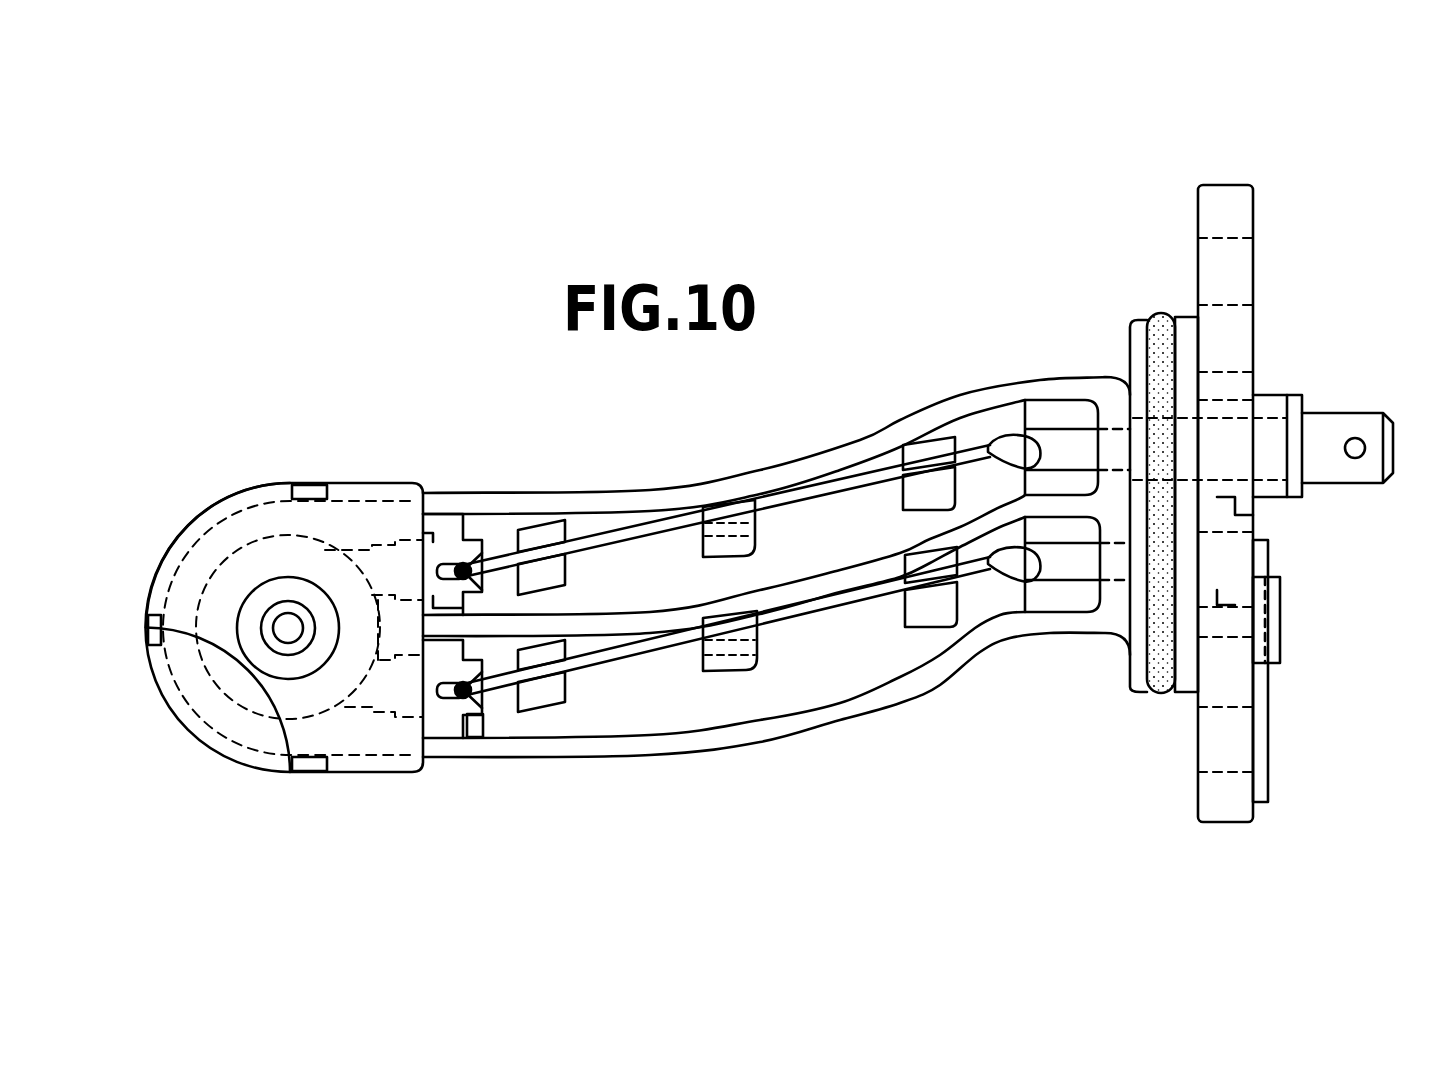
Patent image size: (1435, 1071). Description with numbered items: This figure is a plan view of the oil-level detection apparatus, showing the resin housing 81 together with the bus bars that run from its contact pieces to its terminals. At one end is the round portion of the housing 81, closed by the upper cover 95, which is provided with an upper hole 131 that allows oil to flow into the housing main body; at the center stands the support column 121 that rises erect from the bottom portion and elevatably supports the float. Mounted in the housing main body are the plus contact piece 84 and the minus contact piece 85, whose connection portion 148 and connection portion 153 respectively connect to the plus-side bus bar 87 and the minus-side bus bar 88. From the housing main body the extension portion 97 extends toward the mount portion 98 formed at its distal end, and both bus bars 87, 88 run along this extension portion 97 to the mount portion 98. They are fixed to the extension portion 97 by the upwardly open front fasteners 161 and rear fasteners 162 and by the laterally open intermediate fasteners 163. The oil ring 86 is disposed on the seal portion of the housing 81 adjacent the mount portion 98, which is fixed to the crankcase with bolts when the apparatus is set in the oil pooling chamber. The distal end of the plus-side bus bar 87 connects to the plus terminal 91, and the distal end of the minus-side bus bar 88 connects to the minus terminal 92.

The housing 81 is at (375, 452).
The plus contact piece 84 is at (360, 540).
The minus contact piece 85 is at (368, 722).
The oil ring 86 is at (1160, 310).
The plus-side bus bar 87 is at (648, 528).
The minus-side bus bar 88 is at (702, 742).
The plus terminal 91 is at (1340, 413).
The minus terminal 92 is at (1267, 558).
The upper cover 95 is at (272, 483).
The extension portion 97 is at (832, 447).
The mount portion 98 is at (1228, 165).
The support column 121 is at (288, 628).
The upper hole 131 is at (255, 645).
The connection portion 148 is at (475, 565).
The connection portion 153 is at (477, 715).
The front fasteners 161 is at (565, 522).
The rear fasteners 162 is at (932, 445).
The intermediate fasteners 163 is at (735, 510).